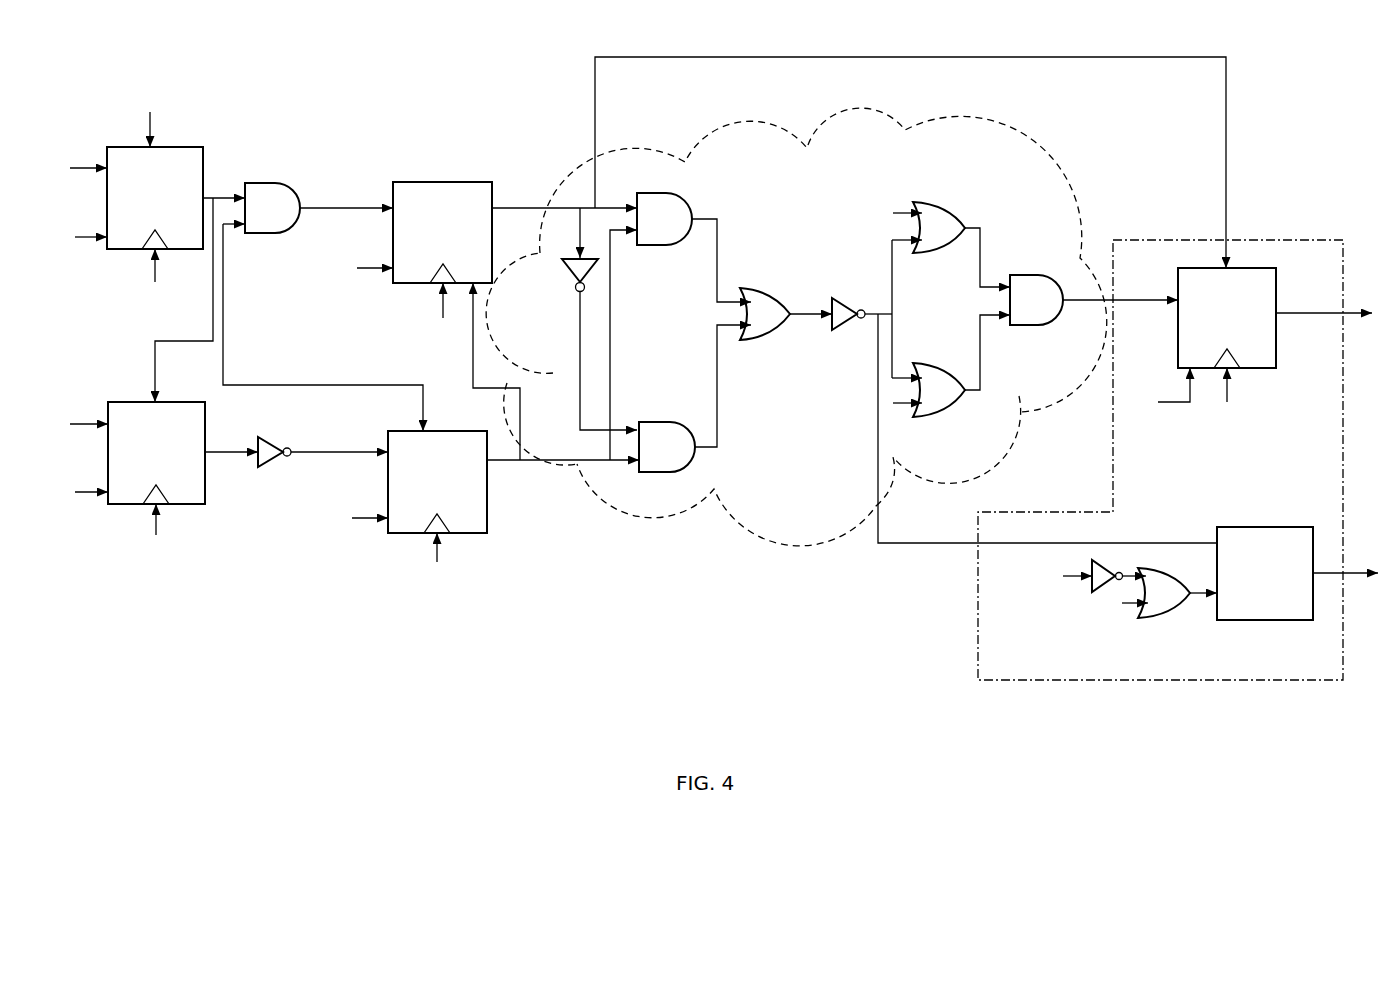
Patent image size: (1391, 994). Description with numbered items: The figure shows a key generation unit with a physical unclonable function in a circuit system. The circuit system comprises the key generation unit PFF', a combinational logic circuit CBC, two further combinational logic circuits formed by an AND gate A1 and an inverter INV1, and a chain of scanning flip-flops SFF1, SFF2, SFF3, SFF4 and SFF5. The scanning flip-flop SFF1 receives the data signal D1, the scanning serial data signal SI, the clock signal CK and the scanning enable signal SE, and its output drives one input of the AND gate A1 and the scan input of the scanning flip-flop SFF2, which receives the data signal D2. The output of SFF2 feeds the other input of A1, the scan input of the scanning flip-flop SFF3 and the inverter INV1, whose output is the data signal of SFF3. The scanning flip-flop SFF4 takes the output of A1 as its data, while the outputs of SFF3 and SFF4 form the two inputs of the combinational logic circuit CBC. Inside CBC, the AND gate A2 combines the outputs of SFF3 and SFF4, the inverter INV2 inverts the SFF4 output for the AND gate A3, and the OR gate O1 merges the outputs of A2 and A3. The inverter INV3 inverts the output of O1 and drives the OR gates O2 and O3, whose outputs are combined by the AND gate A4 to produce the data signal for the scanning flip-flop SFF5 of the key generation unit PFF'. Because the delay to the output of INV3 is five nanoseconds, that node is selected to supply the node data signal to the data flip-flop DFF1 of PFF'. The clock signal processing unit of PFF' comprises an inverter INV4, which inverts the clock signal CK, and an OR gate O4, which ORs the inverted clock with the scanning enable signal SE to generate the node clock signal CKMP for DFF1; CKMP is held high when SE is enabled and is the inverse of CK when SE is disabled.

The scanning flip-flop SFF1 is at (265, 289).
The scanning flip-flop SFF2 is at (183, 453).
The scanning flip-flop SFF3 is at (513, 482).
The scanning flip-flop SFF4 is at (809, 258).
The scanning flip-flop SFF5 is at (1275, 318).
The AND gate A1 is at (319, 191).
The AND gate A2 is at (680, 308).
The AND gate A3 is at (695, 418).
The AND gate A4 is at (1094, 281).
The inverter INV1 is at (312, 471).
The inverter INV2 is at (573, 344).
The inverter INV3 is at (1012, 378).
The inverter INV4 is at (1083, 588).
The OR gate O1 is at (786, 293).
The OR gate O2 is at (961, 223).
The OR gate O3 is at (961, 366).
The OR gate O4 is at (1147, 625).
The combinational logic circuit CBC is at (847, 196).
The key generation unit PFF' is at (1160, 460).
The data flip-flop DFF1 is at (1297, 573).
The node clock signal CKMP is at (1194, 605).
The scanning serial data signal SI is at (149, 113).
The scanning enable signal SE is at (615, 423).
The clock signal CK is at (686, 422).
The data signal D1 is at (72, 171).
The data signal D2 is at (73, 428).